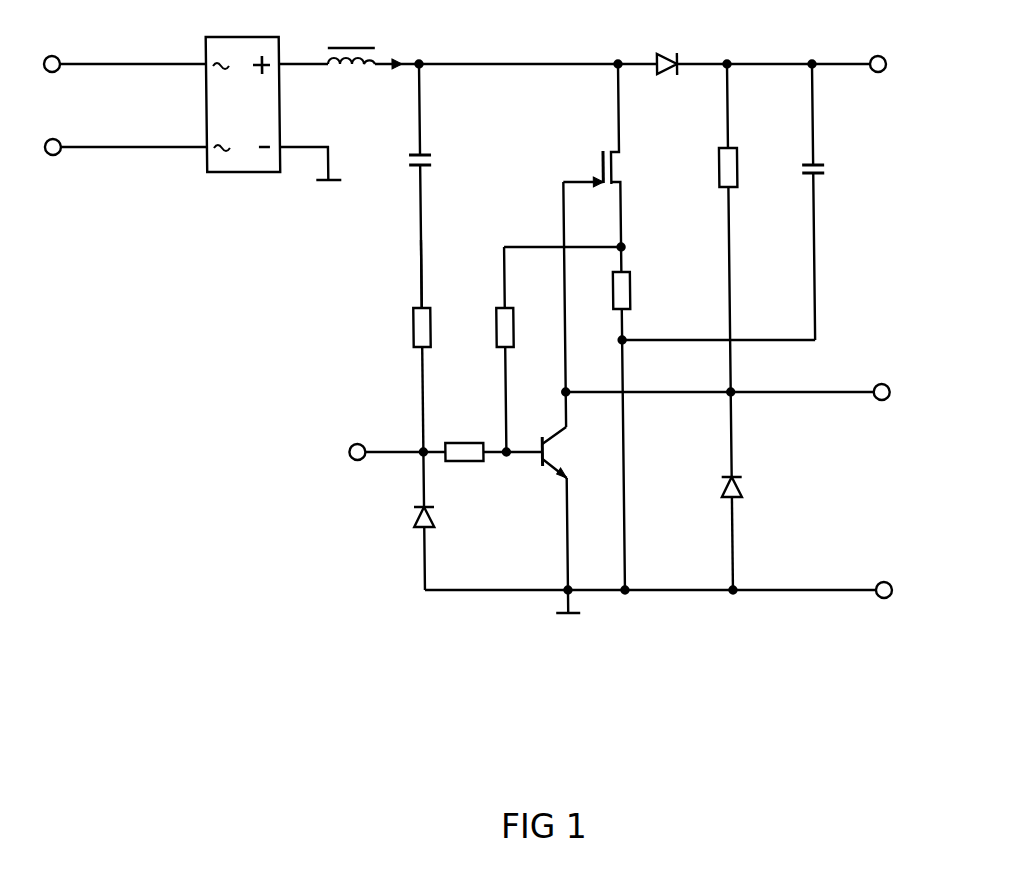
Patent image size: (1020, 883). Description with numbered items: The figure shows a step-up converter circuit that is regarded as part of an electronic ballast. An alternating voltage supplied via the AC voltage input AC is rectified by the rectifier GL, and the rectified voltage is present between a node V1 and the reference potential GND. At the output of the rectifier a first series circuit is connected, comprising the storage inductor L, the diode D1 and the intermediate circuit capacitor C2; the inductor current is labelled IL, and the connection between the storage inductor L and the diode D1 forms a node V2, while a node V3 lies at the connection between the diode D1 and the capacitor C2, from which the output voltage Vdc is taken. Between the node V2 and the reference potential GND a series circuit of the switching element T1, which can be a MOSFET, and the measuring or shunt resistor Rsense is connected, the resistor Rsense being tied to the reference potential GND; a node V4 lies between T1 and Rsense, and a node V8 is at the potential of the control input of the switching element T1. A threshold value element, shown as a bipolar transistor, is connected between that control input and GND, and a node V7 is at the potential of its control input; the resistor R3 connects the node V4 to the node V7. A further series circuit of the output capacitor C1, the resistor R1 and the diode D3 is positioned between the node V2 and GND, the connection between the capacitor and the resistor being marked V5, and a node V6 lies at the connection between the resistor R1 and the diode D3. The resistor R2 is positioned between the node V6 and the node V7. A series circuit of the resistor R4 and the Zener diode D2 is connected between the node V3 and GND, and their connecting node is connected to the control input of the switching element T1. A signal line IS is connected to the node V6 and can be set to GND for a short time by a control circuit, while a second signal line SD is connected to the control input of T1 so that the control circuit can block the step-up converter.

The AC voltage input AC is at (121, 105).
The rectifier GL is at (274, 108).
The node V1 is at (303, 51).
The storage inductor L is at (351, 43).
The inductor current IL is at (397, 54).
The node V2 is at (536, 52).
The output capacitor C1 is at (435, 186).
The node voltage V5 is at (403, 270).
The resistor R1 is at (440, 380).
The signal line IS is at (383, 453).
The node V6 is at (406, 438).
The resistor R2 is at (493, 439).
The node V7 is at (507, 469).
The diode D3 is at (444, 521).
The resistor R3 is at (523, 349).
The switching element T1 is at (609, 155).
The node V4 is at (582, 248).
The measuring or shunt resistor Rsense is at (715, 418).
The node V8 is at (700, 392).
The second signal line SD is at (830, 392).
The diode D1 is at (760, 51).
The resistor R4 is at (745, 269).
The diode D2 is at (757, 533).
The node V3 is at (805, 47).
The DC output terminal Vdc is at (902, 65).
The intermediate circuit capacitor C2 is at (831, 202).
The reference potential GND is at (689, 591).